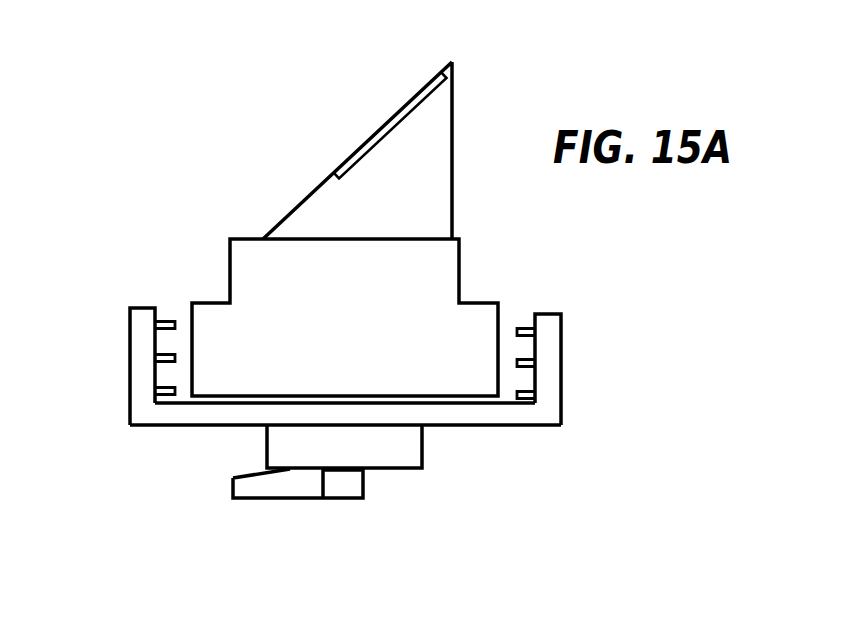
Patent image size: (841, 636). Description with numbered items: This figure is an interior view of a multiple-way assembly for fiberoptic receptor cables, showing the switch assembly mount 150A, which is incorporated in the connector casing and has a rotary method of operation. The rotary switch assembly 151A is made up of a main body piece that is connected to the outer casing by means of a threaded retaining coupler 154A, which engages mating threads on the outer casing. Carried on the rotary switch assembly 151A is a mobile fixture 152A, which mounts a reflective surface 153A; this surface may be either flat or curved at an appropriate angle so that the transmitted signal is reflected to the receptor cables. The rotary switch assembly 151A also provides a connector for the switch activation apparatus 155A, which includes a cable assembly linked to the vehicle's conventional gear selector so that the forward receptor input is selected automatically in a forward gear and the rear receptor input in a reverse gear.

The switch assembly mount 150A is at (580, 300).
The rotary switch assembly 151A is at (414, 488).
The mobile fixture 152A is at (459, 257).
The reflective surface 153A is at (366, 140).
The threaded retaining coupler 154A is at (130, 337).
The switch activation apparatus 155A is at (310, 500).